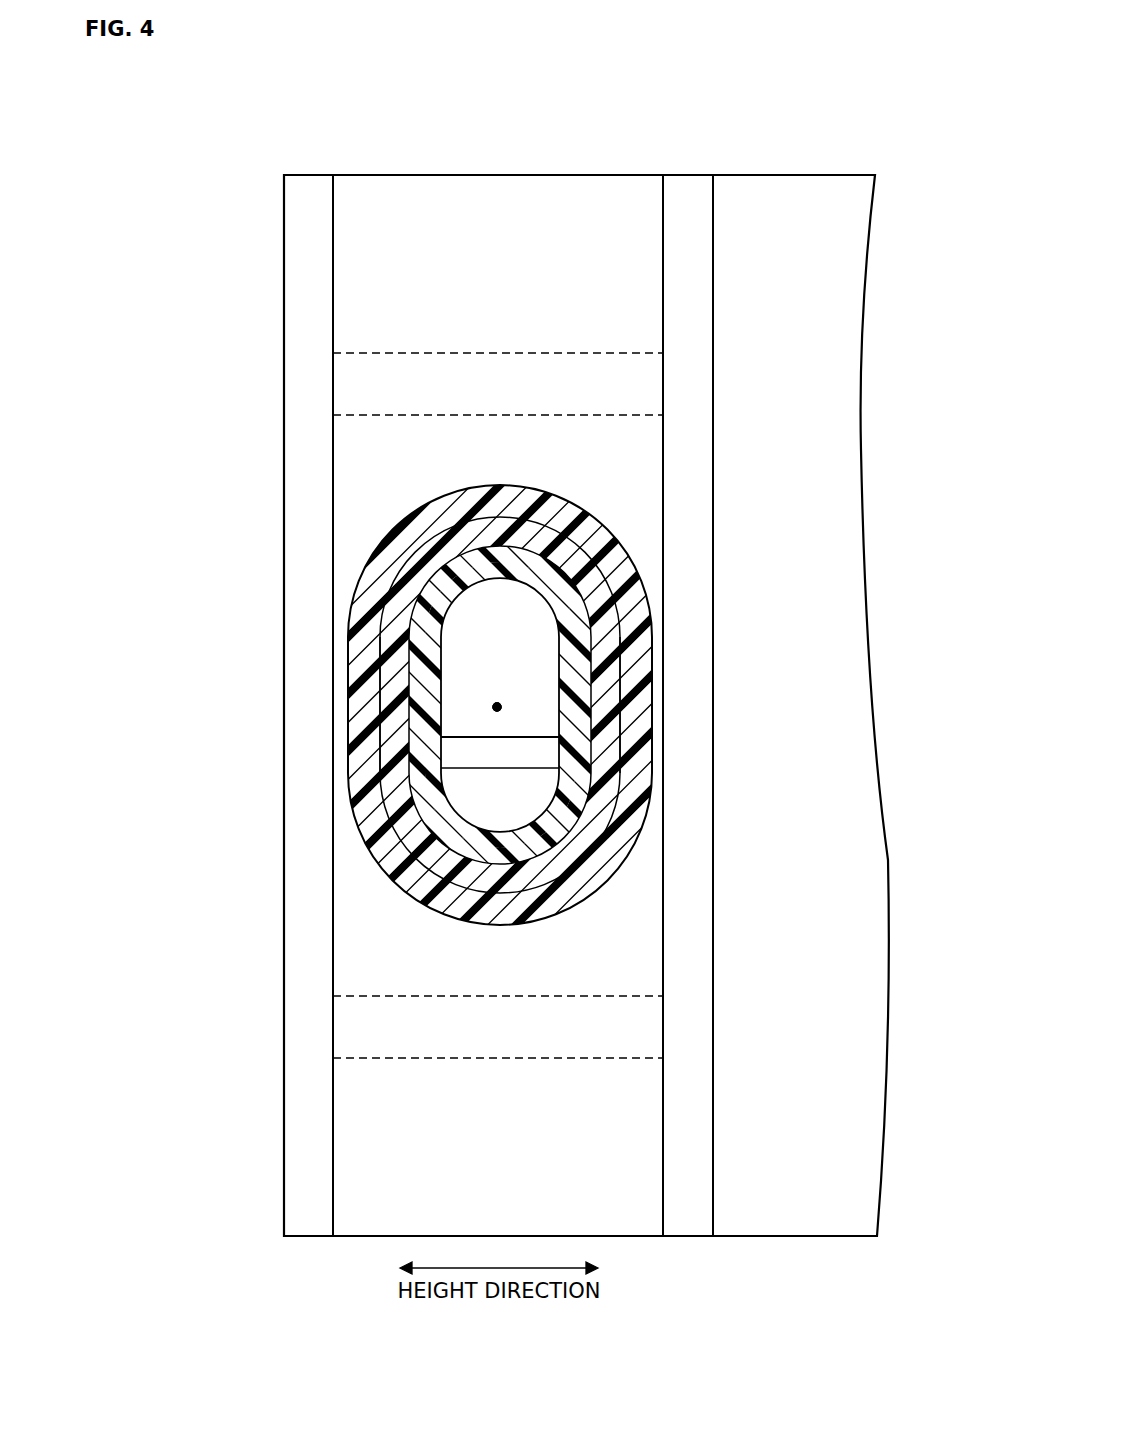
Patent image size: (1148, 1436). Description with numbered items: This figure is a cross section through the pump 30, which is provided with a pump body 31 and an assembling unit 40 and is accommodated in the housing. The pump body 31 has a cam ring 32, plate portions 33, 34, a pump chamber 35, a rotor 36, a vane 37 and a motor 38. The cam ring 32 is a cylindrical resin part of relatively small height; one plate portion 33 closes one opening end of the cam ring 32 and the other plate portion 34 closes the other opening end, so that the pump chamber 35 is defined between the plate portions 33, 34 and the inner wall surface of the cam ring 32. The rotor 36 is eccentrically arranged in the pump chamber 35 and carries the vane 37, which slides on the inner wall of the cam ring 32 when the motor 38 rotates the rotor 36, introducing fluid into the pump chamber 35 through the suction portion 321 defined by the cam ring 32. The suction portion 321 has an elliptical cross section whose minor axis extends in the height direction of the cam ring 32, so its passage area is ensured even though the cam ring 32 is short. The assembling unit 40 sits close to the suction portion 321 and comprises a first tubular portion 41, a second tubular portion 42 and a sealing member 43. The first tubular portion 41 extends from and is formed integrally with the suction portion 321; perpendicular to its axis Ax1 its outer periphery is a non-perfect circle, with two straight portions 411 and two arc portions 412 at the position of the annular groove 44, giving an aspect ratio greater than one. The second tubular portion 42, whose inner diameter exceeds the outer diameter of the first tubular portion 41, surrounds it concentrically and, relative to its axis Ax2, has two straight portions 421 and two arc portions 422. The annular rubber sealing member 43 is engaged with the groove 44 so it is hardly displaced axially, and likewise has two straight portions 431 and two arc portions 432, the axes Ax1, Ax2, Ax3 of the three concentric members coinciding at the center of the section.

The pump 30 is at (574, 73).
The pump body 31 is at (507, 185).
The cam ring 32 is at (447, 185).
The plate portion 33 is at (308, 196).
The plate portion 34 is at (676, 185).
The pump chamber 35 is at (360, 1027).
The rotor 36 is at (362, 931).
The vane 37 is at (400, 758).
The motor 38 is at (791, 196).
The assembling unit 40 is at (549, 700).
The first tubular portion 41 is at (549, 700).
The second tubular portion 42 is at (365, 705).
The sealing member 43 is at (522, 700).
The annular groove 44 is at (455, 757).
The suction portion 321 is at (636, 642).
The straight portion 411 is at (377, 729).
The arc portion 412 is at (463, 545).
The straight portion 421 is at (442, 660).
The arc portion 422 is at (530, 600).
The straight portion 431 is at (382, 712).
The arc portion 432 is at (522, 586).
The axis Ax1 is at (503, 707).
The axis Ax2 is at (497, 707).
The axis Ax3 is at (497, 707).